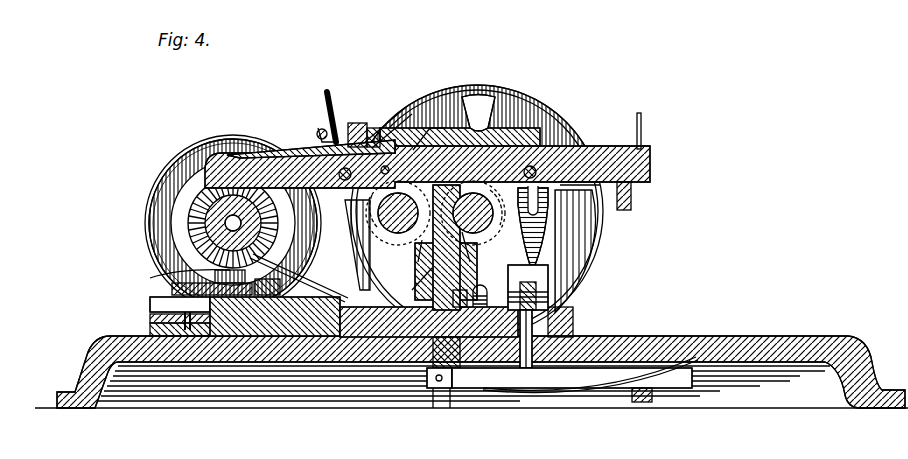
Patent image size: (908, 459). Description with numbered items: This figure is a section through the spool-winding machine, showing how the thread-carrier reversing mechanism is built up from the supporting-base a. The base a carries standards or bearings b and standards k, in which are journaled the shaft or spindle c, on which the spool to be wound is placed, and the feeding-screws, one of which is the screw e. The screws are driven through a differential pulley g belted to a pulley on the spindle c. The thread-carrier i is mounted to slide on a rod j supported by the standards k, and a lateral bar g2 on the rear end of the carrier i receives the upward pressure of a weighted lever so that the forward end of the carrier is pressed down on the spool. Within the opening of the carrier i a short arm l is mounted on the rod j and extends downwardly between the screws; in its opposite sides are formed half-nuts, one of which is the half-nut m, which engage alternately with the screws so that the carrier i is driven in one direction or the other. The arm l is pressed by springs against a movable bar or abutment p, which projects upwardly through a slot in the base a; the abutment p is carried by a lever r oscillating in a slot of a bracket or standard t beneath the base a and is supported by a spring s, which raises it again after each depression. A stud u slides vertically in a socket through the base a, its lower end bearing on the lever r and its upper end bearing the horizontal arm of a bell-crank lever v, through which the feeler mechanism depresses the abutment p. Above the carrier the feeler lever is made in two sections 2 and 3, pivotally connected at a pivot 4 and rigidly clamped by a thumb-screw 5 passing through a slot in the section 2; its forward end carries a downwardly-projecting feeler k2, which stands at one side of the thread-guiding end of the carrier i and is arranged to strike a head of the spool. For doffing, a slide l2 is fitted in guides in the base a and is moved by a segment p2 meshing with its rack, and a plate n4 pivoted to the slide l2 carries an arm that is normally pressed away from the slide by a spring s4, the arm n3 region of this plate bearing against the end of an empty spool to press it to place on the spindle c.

The supporting-base a is at (471, 359).
The standard or bearing b is at (170, 277).
The shaft or spindle c is at (222, 232).
The feeding-screw e is at (397, 230).
The differential pulley g is at (537, 130).
The lateral bar g2 is at (632, 197).
The thread-carrier i is at (205, 176).
The rod j is at (375, 130).
The standard k is at (352, 277).
The feeler k2 is at (474, 211).
The short arm l is at (466, 252).
The slide l2 is at (215, 305).
The half-nut m is at (422, 258).
The plate n3 is at (216, 272).
The plate n4 is at (196, 281).
The movable bar or abutment p is at (437, 318).
The segment p2 is at (160, 318).
The lever r is at (572, 376).
The spring s is at (566, 391).
The spring s4 is at (268, 279).
The bracket or standard t is at (653, 396).
The stud u is at (540, 346).
The bell-crank lever v is at (533, 225).
The section 2 is at (495, 128).
The section 3 is at (280, 145).
The pivot 4 is at (373, 121).
The thumb-screw 5 is at (478, 127).